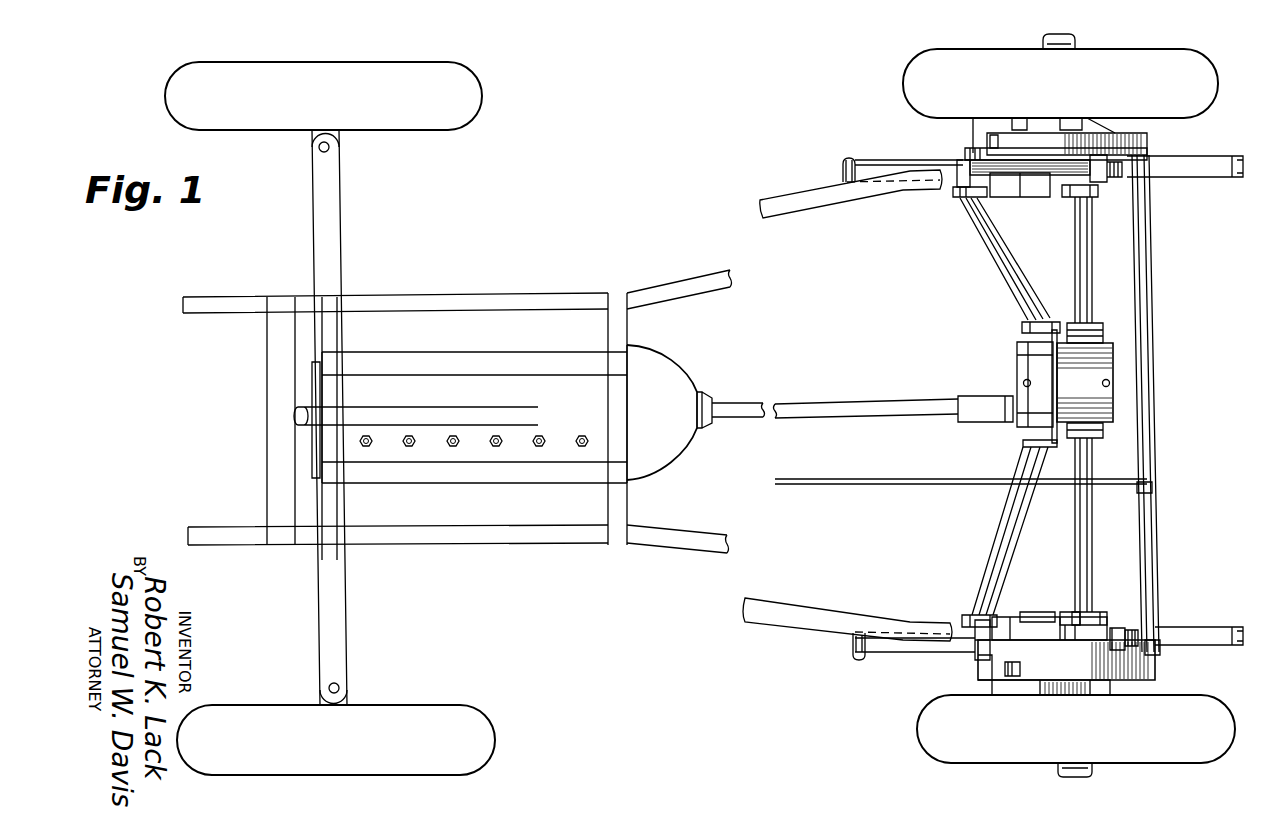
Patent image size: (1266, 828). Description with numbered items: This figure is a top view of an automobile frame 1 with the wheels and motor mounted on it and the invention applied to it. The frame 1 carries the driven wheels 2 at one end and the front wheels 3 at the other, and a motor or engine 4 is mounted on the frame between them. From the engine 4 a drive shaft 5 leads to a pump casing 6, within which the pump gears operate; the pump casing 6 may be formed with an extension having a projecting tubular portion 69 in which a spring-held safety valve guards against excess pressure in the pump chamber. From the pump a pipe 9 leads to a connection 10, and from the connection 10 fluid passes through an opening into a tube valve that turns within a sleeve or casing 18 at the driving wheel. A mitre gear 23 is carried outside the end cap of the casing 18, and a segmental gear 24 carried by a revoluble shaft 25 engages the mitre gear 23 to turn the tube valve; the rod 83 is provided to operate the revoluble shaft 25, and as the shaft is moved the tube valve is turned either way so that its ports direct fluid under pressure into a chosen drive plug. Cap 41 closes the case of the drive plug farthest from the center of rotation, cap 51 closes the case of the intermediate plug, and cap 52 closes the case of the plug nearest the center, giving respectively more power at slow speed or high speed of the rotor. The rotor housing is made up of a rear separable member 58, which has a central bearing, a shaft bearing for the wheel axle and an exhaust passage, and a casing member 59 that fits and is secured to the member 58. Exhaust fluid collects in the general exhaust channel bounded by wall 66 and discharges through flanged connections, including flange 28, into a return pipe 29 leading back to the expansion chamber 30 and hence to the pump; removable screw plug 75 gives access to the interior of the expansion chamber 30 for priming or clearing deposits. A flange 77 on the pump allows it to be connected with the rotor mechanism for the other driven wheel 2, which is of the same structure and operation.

The automobile frame 1 is at (725, 268).
The driven wheels 2 is at (905, 84).
The front wheels 3 is at (483, 98).
The motor or engine 4 is at (669, 379).
The drive shaft 5 is at (764, 406).
The pump casing 6 is at (1020, 426).
The pipe 9 is at (1005, 531).
The connection 10 is at (977, 652).
The casing 18 is at (1112, 627).
The mitre gear 23 is at (1128, 630).
The segmental gear 24 is at (1153, 648).
The revoluble shaft 25 is at (1158, 627).
The flange 28 is at (1074, 612).
The return pipe 29 is at (1076, 578).
The expansion chamber 30 is at (1105, 366).
The cap 41 is at (1007, 622).
The cap 51 is at (1022, 612).
The cap 52 is at (1078, 563).
The housing member 58 is at (1146, 672).
The casing member 59 is at (982, 674).
The wall 66 is at (1040, 647).
The projecting tubular portion 69 is at (1023, 384).
The removable screw plug 75 is at (1109, 388).
The flange 77 is at (1022, 333).
The rod 83 is at (864, 486).